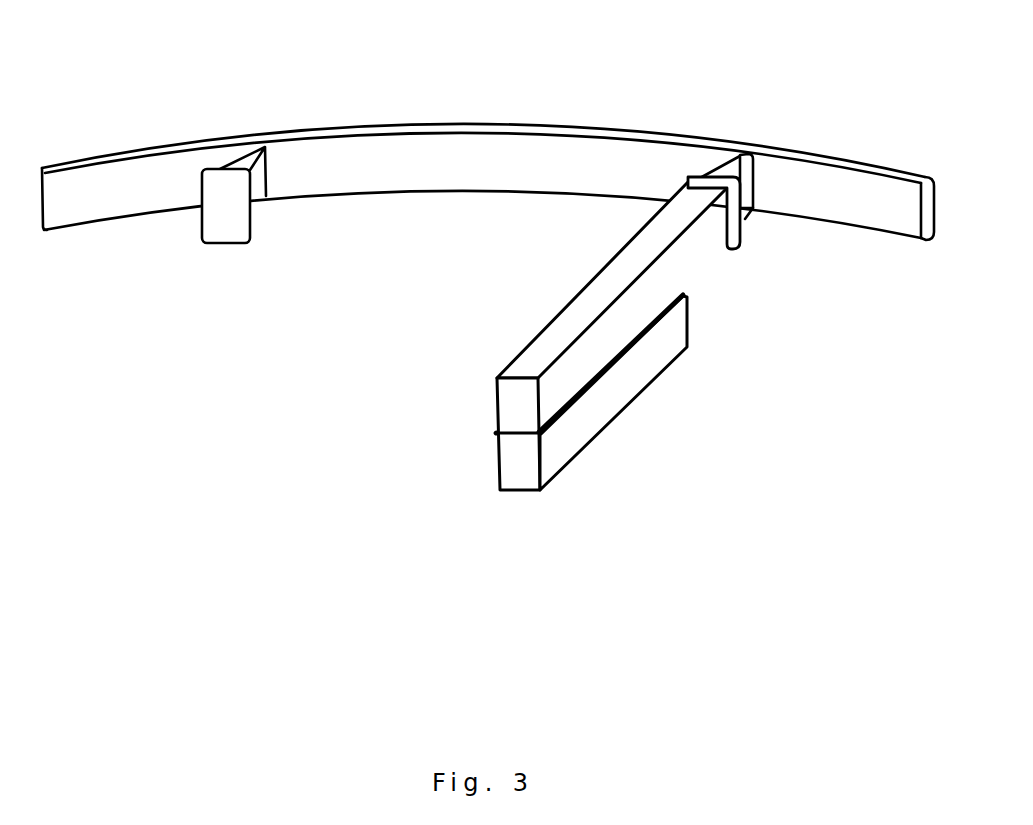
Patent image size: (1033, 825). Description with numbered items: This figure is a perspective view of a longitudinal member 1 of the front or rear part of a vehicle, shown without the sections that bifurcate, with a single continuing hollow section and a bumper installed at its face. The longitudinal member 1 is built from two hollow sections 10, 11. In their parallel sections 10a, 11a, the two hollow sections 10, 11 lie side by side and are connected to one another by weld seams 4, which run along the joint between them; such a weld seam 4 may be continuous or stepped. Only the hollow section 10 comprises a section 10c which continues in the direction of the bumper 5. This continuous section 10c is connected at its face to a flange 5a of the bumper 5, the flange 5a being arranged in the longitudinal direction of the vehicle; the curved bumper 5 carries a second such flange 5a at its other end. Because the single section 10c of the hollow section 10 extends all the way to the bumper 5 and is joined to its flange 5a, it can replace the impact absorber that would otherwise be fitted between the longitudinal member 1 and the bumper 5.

The longitudinal member 1 is at (604, 398).
The weld seam 4 is at (538, 433).
The bumper 5 is at (480, 133).
The flange 5a is at (223, 228).
The hollow section 10 is at (566, 336).
The parallel section 10a is at (533, 357).
The continuous section 10c is at (708, 252).
The hollow section 11 is at (629, 395).
The parallel section 11a is at (578, 420).